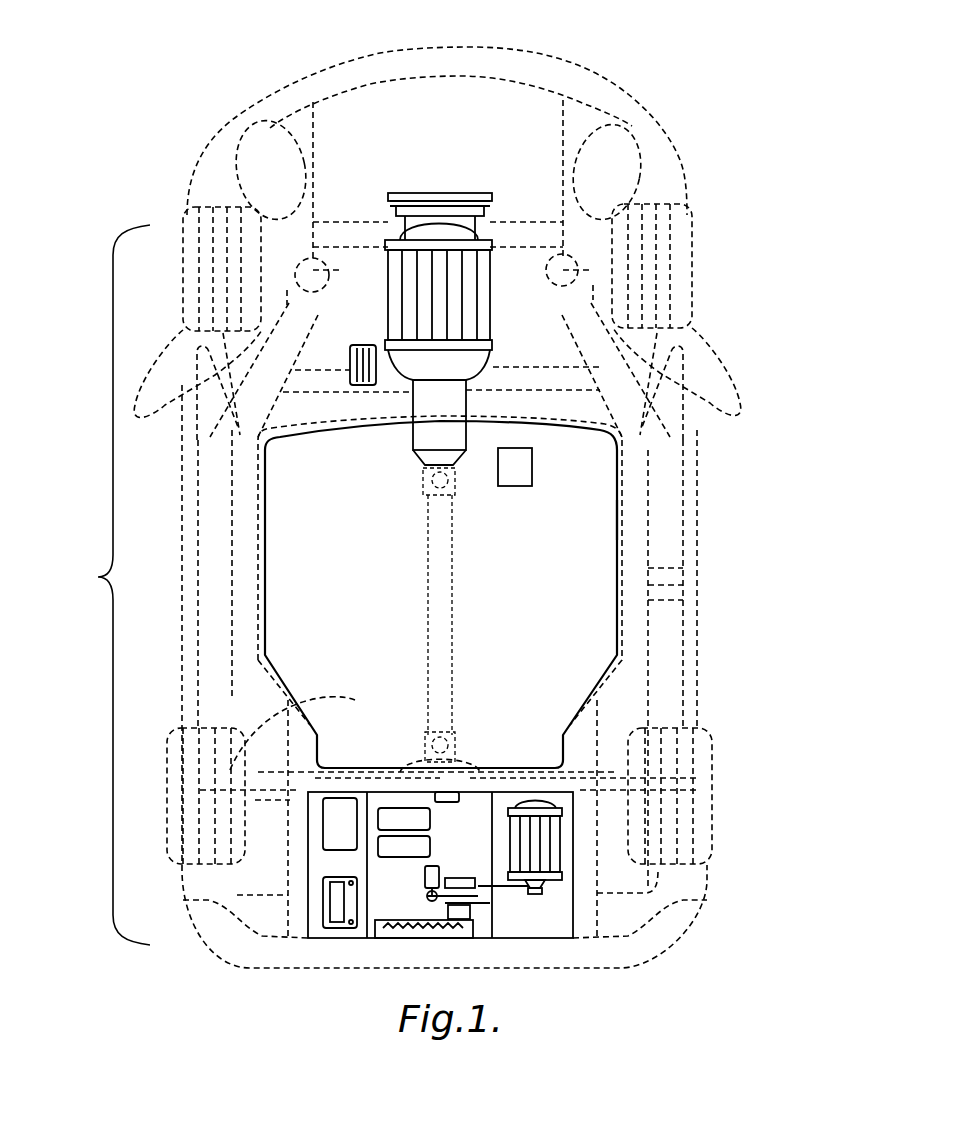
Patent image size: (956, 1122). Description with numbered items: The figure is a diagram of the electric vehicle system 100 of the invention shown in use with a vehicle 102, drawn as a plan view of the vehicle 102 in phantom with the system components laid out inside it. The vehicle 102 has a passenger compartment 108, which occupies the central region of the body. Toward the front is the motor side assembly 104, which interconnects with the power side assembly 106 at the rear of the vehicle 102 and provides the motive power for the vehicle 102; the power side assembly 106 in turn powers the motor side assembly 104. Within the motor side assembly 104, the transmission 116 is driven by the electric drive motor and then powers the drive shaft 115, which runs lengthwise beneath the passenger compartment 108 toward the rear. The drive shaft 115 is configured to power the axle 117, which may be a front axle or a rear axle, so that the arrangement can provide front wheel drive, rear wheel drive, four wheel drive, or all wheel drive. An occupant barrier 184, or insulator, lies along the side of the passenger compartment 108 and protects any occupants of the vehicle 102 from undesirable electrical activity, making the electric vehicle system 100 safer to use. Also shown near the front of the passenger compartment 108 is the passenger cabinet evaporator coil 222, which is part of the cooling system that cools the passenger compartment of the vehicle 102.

The electric vehicle system 100 is at (96, 585).
The vehicle 102 is at (675, 108).
The motor side assembly 104 is at (336, 376).
The power side assembly 106 is at (505, 783).
The passenger compartment 108 is at (535, 580).
The drive shaft 115 is at (440, 610).
The transmission 116 is at (420, 433).
The axle 117 is at (270, 807).
The occupant barrier 184 is at (617, 518).
The passenger cabinet evaporator coil 222 is at (535, 462).